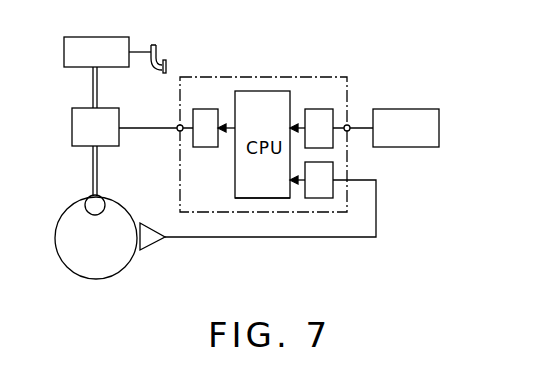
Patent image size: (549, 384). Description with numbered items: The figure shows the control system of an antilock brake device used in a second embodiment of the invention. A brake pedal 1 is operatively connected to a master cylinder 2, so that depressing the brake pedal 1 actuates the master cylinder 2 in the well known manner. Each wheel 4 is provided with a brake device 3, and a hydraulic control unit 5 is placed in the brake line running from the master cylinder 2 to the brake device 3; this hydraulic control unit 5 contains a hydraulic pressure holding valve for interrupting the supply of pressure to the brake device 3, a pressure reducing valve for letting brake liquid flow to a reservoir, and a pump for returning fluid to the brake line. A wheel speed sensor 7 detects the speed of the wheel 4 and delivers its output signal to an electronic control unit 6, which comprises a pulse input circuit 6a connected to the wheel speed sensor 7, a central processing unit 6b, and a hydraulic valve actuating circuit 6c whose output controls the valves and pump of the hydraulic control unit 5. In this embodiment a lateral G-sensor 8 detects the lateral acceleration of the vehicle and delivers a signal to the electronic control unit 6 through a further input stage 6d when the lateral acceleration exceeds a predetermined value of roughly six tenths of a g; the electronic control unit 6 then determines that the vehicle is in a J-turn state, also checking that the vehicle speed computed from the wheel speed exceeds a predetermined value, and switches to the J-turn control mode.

The brake pedal 1 is at (160, 60).
The master cylinder 2 is at (64, 51).
The brake device 3 is at (90, 200).
The wheel 4 is at (122, 266).
The hydraulic control unit 5 is at (72, 128).
The electronic control unit 6 is at (262, 77).
The pulse input circuit 6a is at (318, 198).
The central processing unit 6b is at (262, 198).
The hydraulic valve actuating circuit 6c is at (205, 147).
The input circuit 6d is at (320, 109).
The wheel speed sensor 7 is at (150, 223).
The lateral G-sensor 8 is at (403, 108).